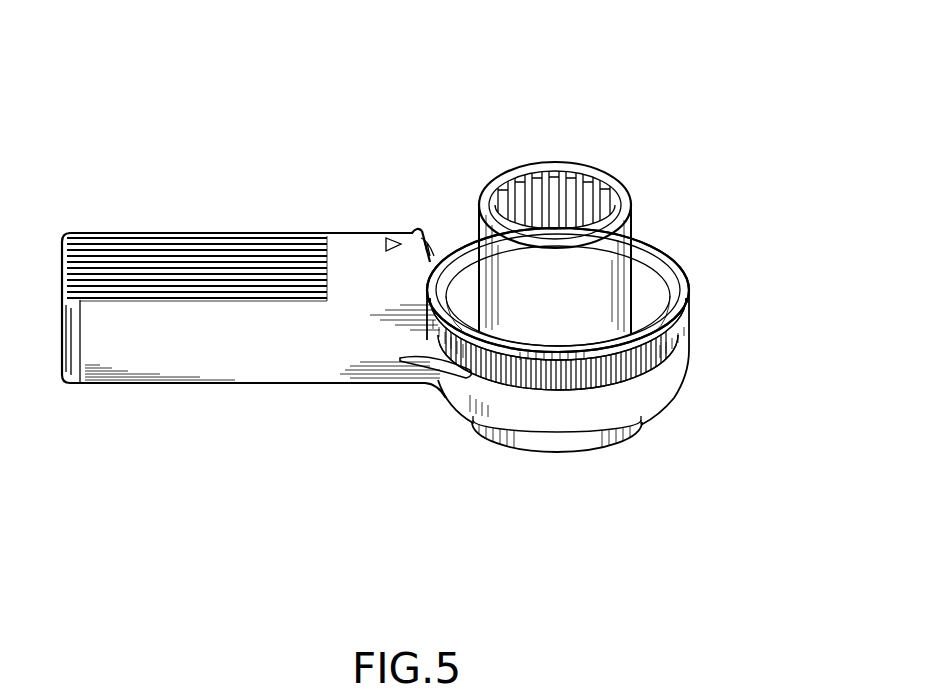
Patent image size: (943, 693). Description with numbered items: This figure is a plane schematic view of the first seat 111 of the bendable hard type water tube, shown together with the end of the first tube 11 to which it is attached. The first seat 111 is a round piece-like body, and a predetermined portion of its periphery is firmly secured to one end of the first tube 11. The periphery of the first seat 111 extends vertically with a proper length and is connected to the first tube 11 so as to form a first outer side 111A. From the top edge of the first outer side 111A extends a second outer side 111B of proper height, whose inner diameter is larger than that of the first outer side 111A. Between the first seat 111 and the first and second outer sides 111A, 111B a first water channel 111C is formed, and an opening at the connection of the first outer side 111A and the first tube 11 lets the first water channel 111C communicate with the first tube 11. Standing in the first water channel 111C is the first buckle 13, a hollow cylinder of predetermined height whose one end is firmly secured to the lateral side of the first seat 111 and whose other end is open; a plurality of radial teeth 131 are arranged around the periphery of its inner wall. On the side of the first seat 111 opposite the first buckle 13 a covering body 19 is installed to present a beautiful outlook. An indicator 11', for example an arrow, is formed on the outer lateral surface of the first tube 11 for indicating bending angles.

The first tube 11 is at (254, 360).
The indicator 11' is at (364, 167).
The first buckle 13 is at (628, 192).
The radial teeth 131 is at (545, 197).
The first seat 111 is at (668, 407).
The first outer side 111A is at (683, 368).
The second outer side 111B is at (683, 291).
The first water channel 111C is at (645, 287).
The covering body 19 is at (612, 447).